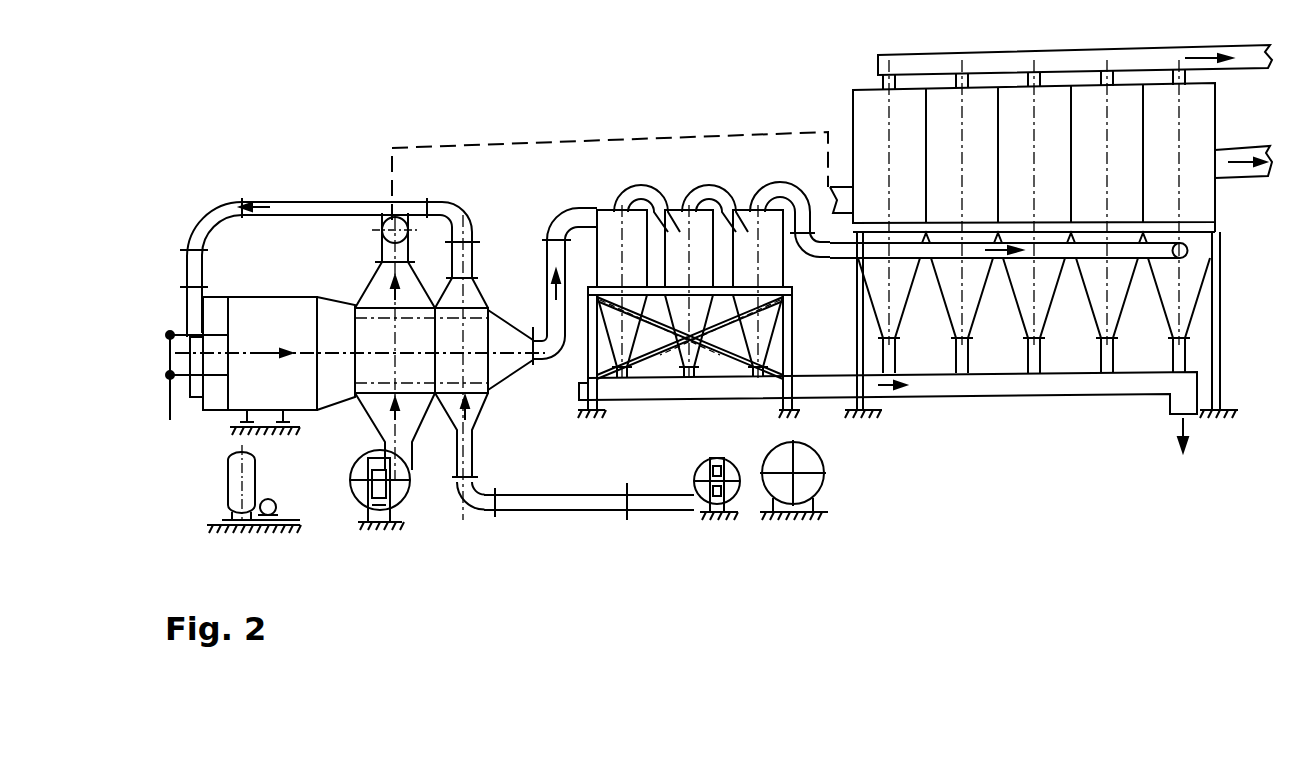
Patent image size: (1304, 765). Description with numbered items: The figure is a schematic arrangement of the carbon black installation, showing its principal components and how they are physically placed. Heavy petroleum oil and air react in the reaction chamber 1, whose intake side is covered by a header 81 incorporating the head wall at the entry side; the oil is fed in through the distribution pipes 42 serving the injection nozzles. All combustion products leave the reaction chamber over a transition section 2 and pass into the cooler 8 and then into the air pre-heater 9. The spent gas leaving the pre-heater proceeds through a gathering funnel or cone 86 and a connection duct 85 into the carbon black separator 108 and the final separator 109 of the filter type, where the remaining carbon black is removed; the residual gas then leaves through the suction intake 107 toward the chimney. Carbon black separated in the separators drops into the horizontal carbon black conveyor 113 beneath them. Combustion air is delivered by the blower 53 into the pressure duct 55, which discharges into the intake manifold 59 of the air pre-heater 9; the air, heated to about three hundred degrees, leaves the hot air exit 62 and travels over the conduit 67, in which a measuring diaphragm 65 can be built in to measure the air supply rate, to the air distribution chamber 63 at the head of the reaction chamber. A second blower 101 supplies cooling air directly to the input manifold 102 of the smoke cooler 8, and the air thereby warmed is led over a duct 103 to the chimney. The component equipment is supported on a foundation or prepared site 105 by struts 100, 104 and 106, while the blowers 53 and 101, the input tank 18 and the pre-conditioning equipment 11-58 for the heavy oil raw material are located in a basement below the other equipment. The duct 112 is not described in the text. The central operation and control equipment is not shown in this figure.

The reaction chamber 1 is at (270, 297).
The transition section 2 is at (335, 308).
The cooler 8 is at (423, 293).
The air pre-heater 9 is at (473, 297).
The pre-conditioning equipment 11-58 is at (228, 493).
The input tank 18 is at (820, 482).
The distribution pipes 42 is at (190, 386).
The blower 53 is at (697, 476).
The pressure duct 55 is at (608, 503).
The intake manifold 59 is at (472, 408).
The hot air exit 62 is at (470, 284).
The air distribution chamber 63 is at (195, 353).
The measuring diaphragm 65 is at (627, 487).
The conduit 67 is at (327, 200).
The header 81 is at (217, 300).
The connection duct 85 is at (552, 260).
The gathering funnel or cone 86 is at (522, 340).
The struts 100 is at (290, 412).
The blower 101 is at (352, 478).
The input manifold 102 is at (385, 443).
The duct 103 is at (590, 140).
The struts 104 is at (585, 410).
The foundation or prepared site 105 is at (870, 414).
The struts 106 is at (788, 352).
The suction intake 107 is at (1266, 72).
The carbon black separator 108 is at (678, 216).
The final separator 109 is at (866, 113).
The inlet duct 112 is at (841, 252).
The horizontal carbon black conveyor 113 is at (997, 393).